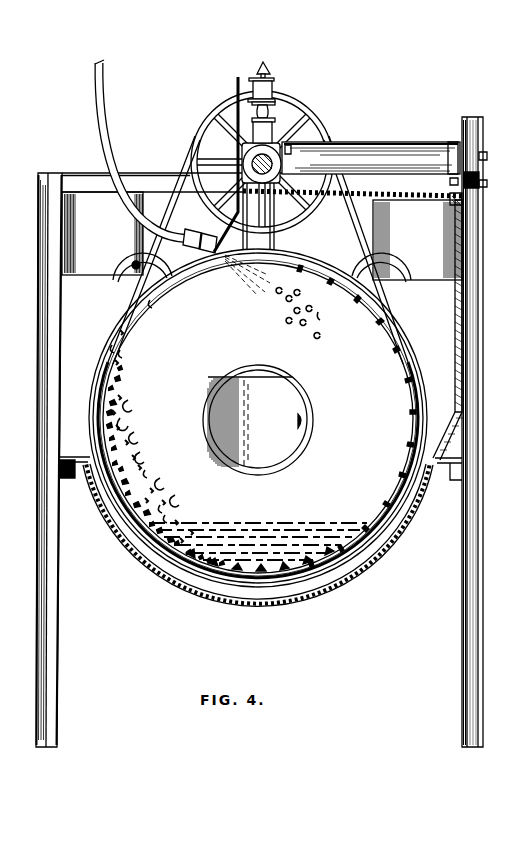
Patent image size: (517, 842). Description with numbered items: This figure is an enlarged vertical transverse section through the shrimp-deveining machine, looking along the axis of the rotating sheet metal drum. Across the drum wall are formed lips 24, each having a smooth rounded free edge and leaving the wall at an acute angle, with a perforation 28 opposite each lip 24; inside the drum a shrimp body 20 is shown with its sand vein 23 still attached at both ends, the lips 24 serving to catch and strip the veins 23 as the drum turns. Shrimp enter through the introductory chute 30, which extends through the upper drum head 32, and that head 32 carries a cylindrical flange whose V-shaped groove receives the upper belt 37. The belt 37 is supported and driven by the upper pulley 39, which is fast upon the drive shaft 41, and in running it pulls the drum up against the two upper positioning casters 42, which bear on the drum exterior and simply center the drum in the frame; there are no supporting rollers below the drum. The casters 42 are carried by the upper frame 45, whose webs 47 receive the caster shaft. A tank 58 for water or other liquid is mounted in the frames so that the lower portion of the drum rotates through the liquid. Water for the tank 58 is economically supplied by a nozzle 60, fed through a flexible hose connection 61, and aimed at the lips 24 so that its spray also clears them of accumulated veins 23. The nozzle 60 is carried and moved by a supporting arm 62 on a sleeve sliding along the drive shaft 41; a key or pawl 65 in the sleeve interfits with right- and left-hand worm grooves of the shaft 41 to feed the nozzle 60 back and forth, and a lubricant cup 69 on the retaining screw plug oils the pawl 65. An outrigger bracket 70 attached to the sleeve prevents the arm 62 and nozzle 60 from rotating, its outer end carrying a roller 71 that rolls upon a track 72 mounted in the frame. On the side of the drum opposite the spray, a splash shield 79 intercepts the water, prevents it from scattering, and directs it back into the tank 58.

The shrimp body 20 is at (131, 432).
The sand vein 23 is at (322, 318).
The lip 24 is at (408, 432).
The perforation 28 is at (398, 351).
The introductory chute 30 is at (273, 445).
The upper drum head 32 is at (353, 409).
The upper belt 37 is at (182, 170).
The upper pulley 39 is at (316, 133).
The drive shaft 41 is at (273, 165).
The upper positioning caster 42 is at (126, 291).
The upper frame 45 is at (60, 550).
The web 47 is at (106, 245).
The tank 58 is at (243, 602).
The nozzle 60 is at (215, 256).
The flexible hose connection 61 is at (104, 136).
The supporting arm 62 is at (236, 92).
The key or pawl 65 is at (260, 148).
The lubricant cup 69 is at (270, 88).
The outrigger bracket 70 is at (445, 147).
The roller 71 is at (479, 178).
The track 72 is at (466, 194).
The splash shield 79 is at (455, 318).